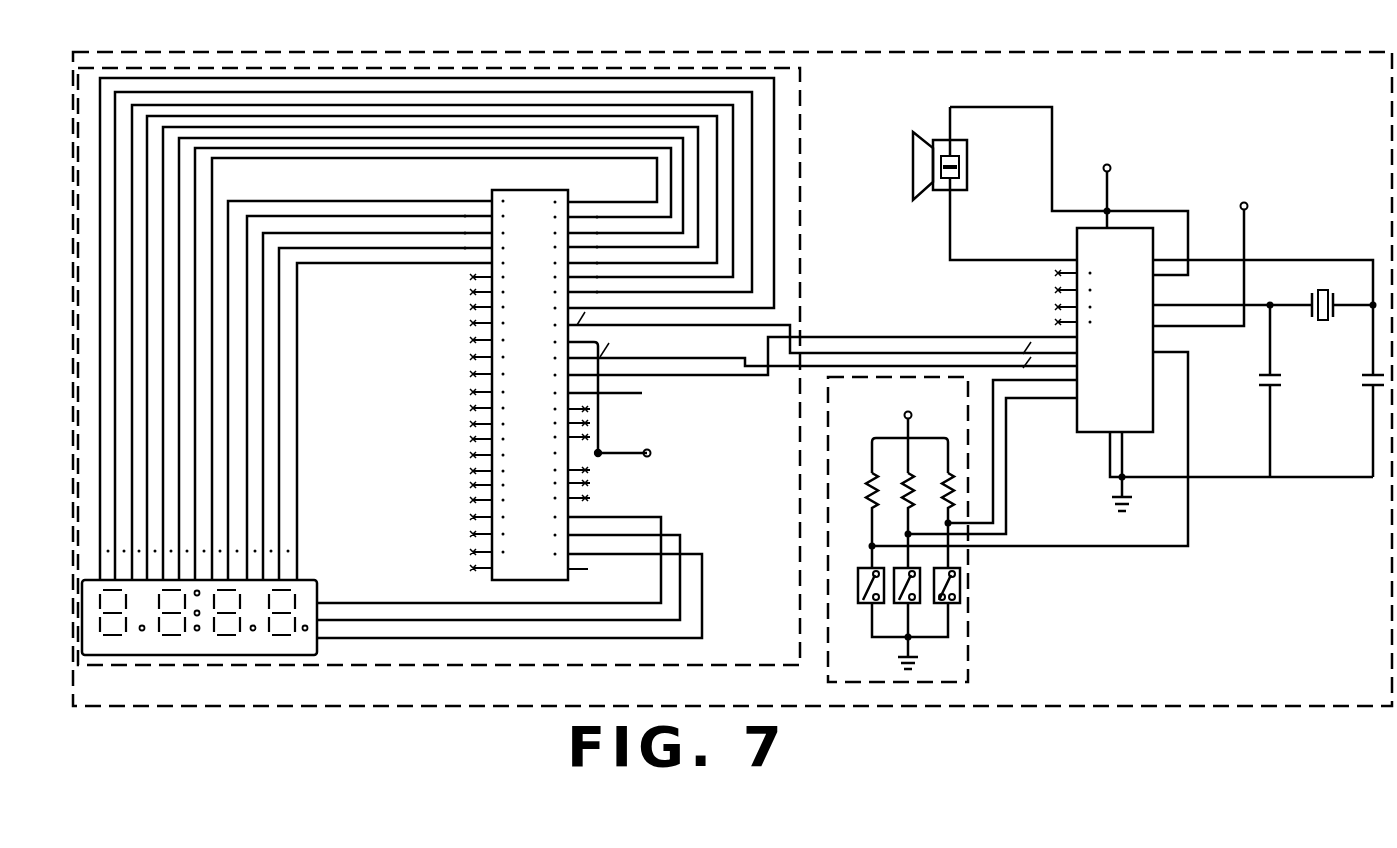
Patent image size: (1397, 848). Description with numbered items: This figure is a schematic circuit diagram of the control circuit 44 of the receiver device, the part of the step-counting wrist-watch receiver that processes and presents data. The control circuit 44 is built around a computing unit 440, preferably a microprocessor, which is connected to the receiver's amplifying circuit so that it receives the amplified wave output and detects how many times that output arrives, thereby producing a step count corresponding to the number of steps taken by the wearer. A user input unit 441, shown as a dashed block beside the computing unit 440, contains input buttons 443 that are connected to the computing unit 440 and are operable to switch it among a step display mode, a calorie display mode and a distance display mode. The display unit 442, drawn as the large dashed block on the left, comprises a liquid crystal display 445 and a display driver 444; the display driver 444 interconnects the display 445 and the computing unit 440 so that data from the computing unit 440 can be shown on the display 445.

The control circuit 44 is at (797, 50).
The display unit 442 is at (798, 166).
The display driver 444 is at (515, 584).
The liquid crystal display 445 is at (306, 580).
The computing unit 440 is at (1127, 232).
The user input unit 441 is at (968, 662).
The input buttons 443 is at (932, 592).